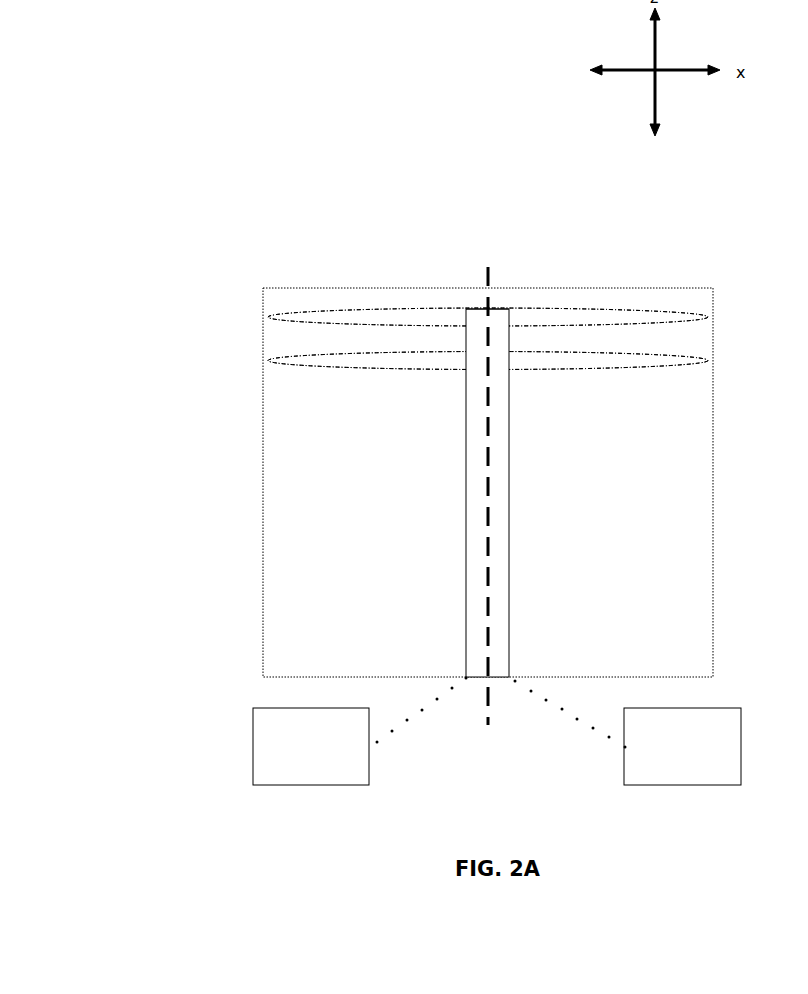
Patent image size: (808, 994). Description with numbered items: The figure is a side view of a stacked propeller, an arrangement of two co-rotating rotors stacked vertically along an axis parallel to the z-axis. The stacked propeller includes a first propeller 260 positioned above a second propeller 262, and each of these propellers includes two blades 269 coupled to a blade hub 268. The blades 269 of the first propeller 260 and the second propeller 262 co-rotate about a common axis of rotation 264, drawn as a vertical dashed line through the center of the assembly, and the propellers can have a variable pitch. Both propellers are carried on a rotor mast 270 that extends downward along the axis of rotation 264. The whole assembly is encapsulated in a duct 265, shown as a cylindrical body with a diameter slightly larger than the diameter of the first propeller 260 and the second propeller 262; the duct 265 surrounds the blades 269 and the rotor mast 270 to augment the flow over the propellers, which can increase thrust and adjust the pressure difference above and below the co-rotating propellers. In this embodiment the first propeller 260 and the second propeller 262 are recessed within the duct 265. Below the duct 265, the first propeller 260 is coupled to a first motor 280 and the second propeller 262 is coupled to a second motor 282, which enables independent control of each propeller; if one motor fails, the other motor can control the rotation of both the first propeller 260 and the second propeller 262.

The first propeller 260 is at (372, 310).
The second propeller 262 is at (330, 368).
The axis of rotation 264 is at (473, 292).
The duct 265 is at (264, 533).
The blade hub 268 is at (495, 318).
The blades 269 is at (580, 313).
The rotor mast 270 is at (473, 587).
The first motor 280 is at (330, 782).
The second motor 282 is at (700, 782).